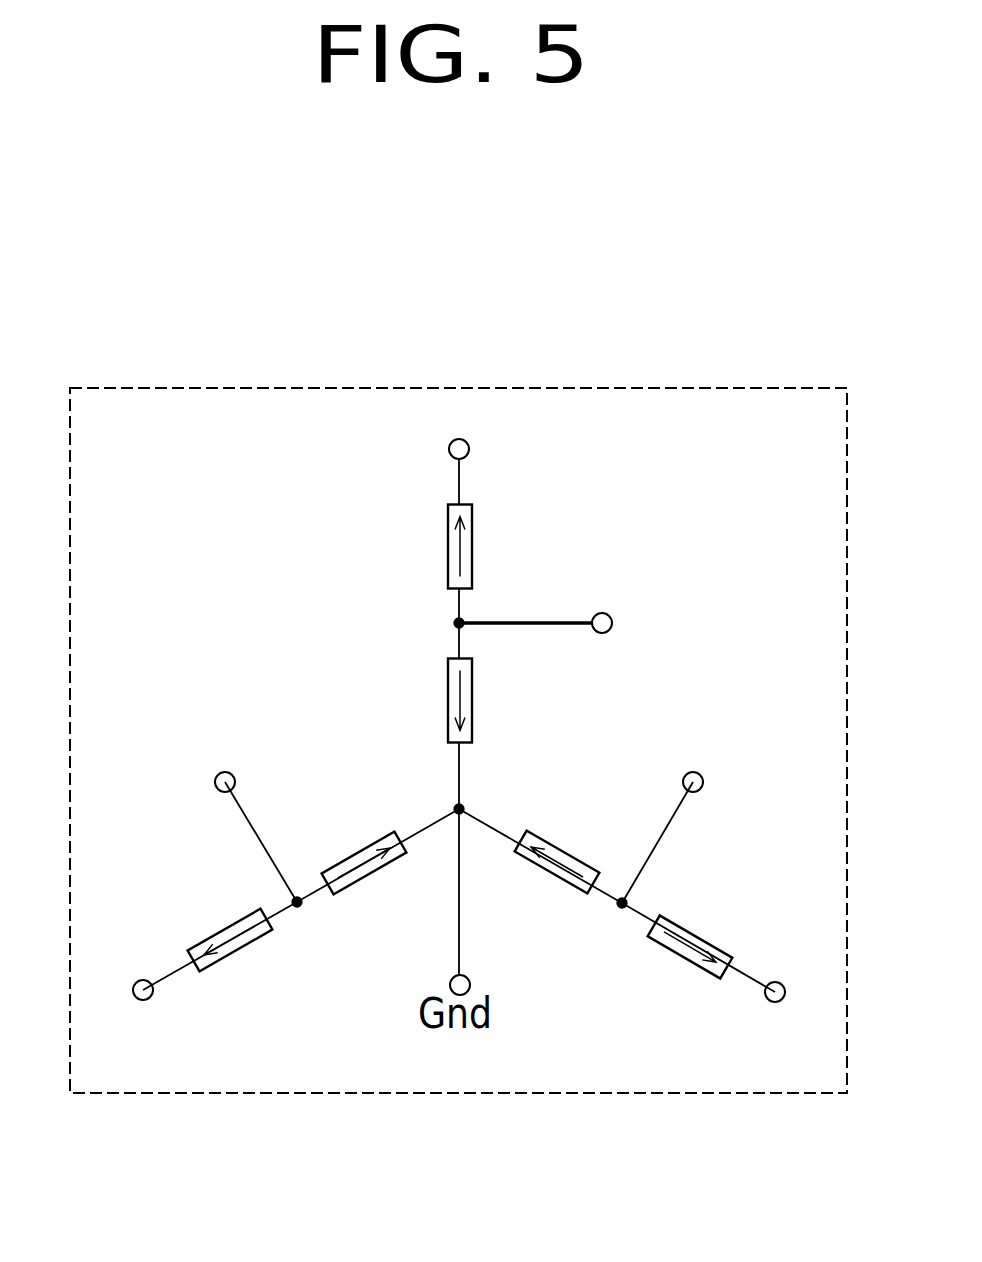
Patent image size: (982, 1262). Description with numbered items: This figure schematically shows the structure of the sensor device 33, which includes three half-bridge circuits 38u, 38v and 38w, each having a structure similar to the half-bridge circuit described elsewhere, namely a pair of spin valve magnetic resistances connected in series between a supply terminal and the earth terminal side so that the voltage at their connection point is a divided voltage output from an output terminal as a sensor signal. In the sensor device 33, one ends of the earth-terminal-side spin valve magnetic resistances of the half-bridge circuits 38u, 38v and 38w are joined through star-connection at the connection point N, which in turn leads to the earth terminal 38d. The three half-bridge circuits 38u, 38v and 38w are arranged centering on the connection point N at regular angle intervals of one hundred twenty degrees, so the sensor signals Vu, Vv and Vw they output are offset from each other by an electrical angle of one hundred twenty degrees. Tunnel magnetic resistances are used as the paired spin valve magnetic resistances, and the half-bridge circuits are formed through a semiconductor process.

The sensor device 33 is at (452, 388).
The earth terminal 38d is at (468, 977).
The half-bridge circuit 38u is at (660, 476).
The half-bridge circuit 38v is at (808, 769).
The half-bridge circuit 38w is at (192, 812).
The connection point N is at (465, 806).